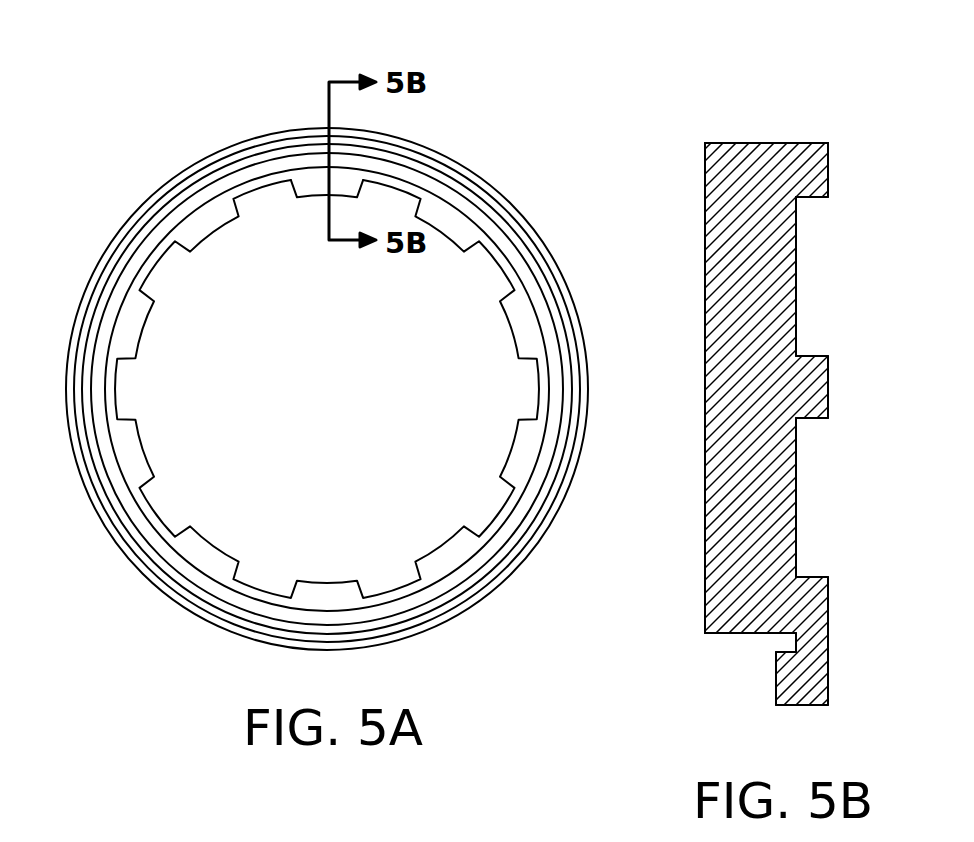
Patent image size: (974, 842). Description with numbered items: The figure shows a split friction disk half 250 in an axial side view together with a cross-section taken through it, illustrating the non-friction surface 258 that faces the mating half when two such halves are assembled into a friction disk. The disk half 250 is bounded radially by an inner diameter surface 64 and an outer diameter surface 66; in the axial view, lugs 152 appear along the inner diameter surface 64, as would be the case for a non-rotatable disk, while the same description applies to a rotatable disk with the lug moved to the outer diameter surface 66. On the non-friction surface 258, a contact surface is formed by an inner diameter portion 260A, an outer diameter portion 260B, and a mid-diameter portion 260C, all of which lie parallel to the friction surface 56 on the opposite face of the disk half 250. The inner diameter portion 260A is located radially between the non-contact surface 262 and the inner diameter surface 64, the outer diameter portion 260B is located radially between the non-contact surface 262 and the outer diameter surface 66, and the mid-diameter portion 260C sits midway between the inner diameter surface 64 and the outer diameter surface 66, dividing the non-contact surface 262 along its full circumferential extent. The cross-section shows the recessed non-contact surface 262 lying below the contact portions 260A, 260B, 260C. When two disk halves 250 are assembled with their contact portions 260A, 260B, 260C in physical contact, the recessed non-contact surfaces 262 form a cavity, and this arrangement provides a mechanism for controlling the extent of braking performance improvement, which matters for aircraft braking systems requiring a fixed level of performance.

In FIG. 5A, the disk half 250 is at (364, 344).
In FIG. 5B, the disk half 250 is at (713, 130).
In FIG. 5A, the outer diameter surface 66 is at (228, 147).
In FIG. 5B, the outer diameter surface 66 is at (770, 143).
In FIG. 5A, the inner diameter surface 64 is at (257, 191).
In FIG. 5B, the inner diameter surface 64 is at (735, 634).
In FIG. 5A, the tab 152 is at (307, 198).
In FIG. 5B, the tab 152 is at (775, 694).
In FIG. 5A, the non-friction surface 258 is at (554, 268).
In FIG. 5B, the non-friction surface 258 is at (811, 275).
In FIG. 5A, the non-contact surface 262 is at (572, 328).
In FIG. 5B, the non-contact surface 262 is at (797, 303).
In FIG. 5A, the inner diameter portion 260A is at (538, 393).
In FIG. 5B, the inner diameter portion 260A is at (844, 610).
In FIG. 5A, the outer diameter portion 260B is at (588, 393).
In FIG. 5B, the outer diameter portion 260B is at (830, 184).
In FIG. 5A, the mid-diameter portion 260C is at (518, 543).
In FIG. 5B, the mid-diameter portion 260C is at (830, 392).
In FIG. 5B, the friction surface 56 is at (705, 516).